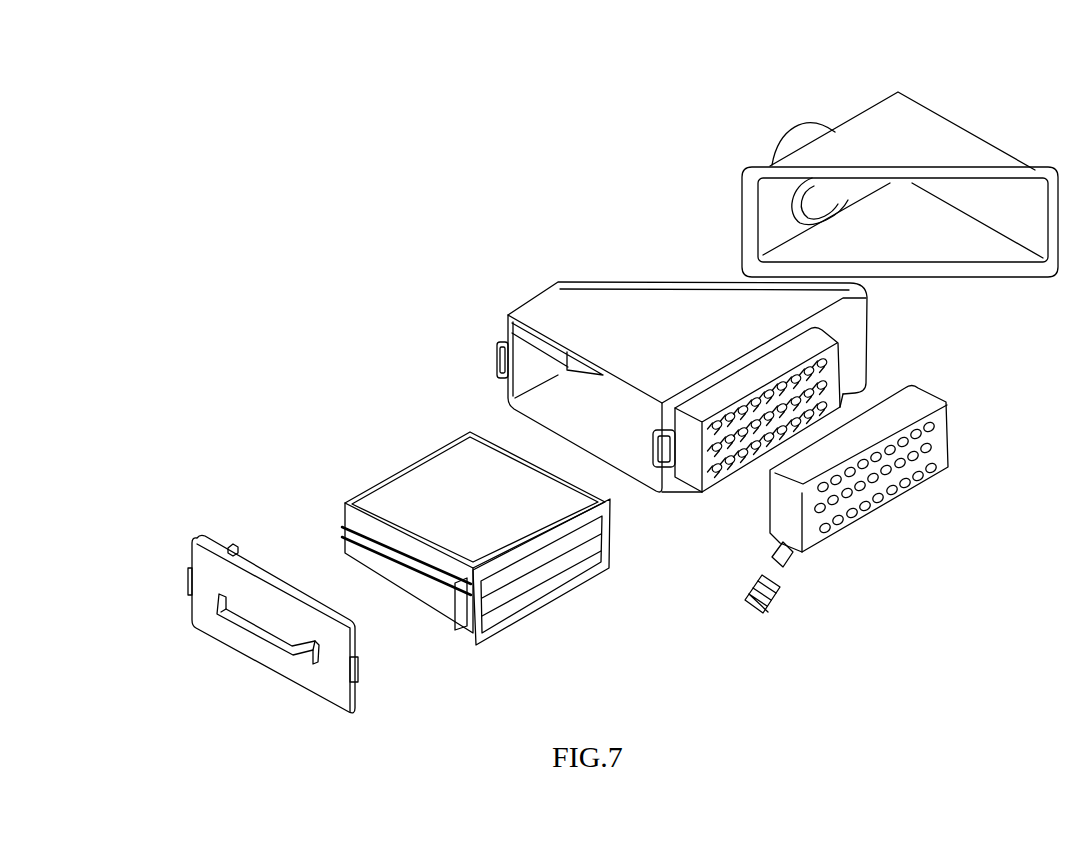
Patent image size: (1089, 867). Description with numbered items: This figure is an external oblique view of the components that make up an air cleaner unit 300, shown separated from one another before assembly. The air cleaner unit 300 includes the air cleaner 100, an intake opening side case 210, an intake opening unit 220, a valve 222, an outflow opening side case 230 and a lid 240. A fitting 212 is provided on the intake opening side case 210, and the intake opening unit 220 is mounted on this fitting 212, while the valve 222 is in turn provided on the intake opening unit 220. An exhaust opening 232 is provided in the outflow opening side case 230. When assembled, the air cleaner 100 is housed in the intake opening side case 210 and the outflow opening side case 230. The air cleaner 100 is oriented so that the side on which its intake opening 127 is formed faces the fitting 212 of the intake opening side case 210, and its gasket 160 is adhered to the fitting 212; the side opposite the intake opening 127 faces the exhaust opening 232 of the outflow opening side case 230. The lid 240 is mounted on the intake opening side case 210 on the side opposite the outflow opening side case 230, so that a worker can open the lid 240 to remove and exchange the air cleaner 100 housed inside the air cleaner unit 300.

The air cleaner unit 300 is at (1073, 42).
The outflow opening side case 230 is at (860, 184).
The exhaust opening 232 is at (795, 137).
The intake opening side case 210 is at (662, 404).
The fitting 212 is at (702, 497).
The intake opening unit 220 is at (920, 495).
The valve 222 is at (780, 605).
The air cleaner 100 is at (460, 554).
The gasket 160 is at (535, 587).
The intake opening 127 is at (550, 553).
The lid 240 is at (173, 553).